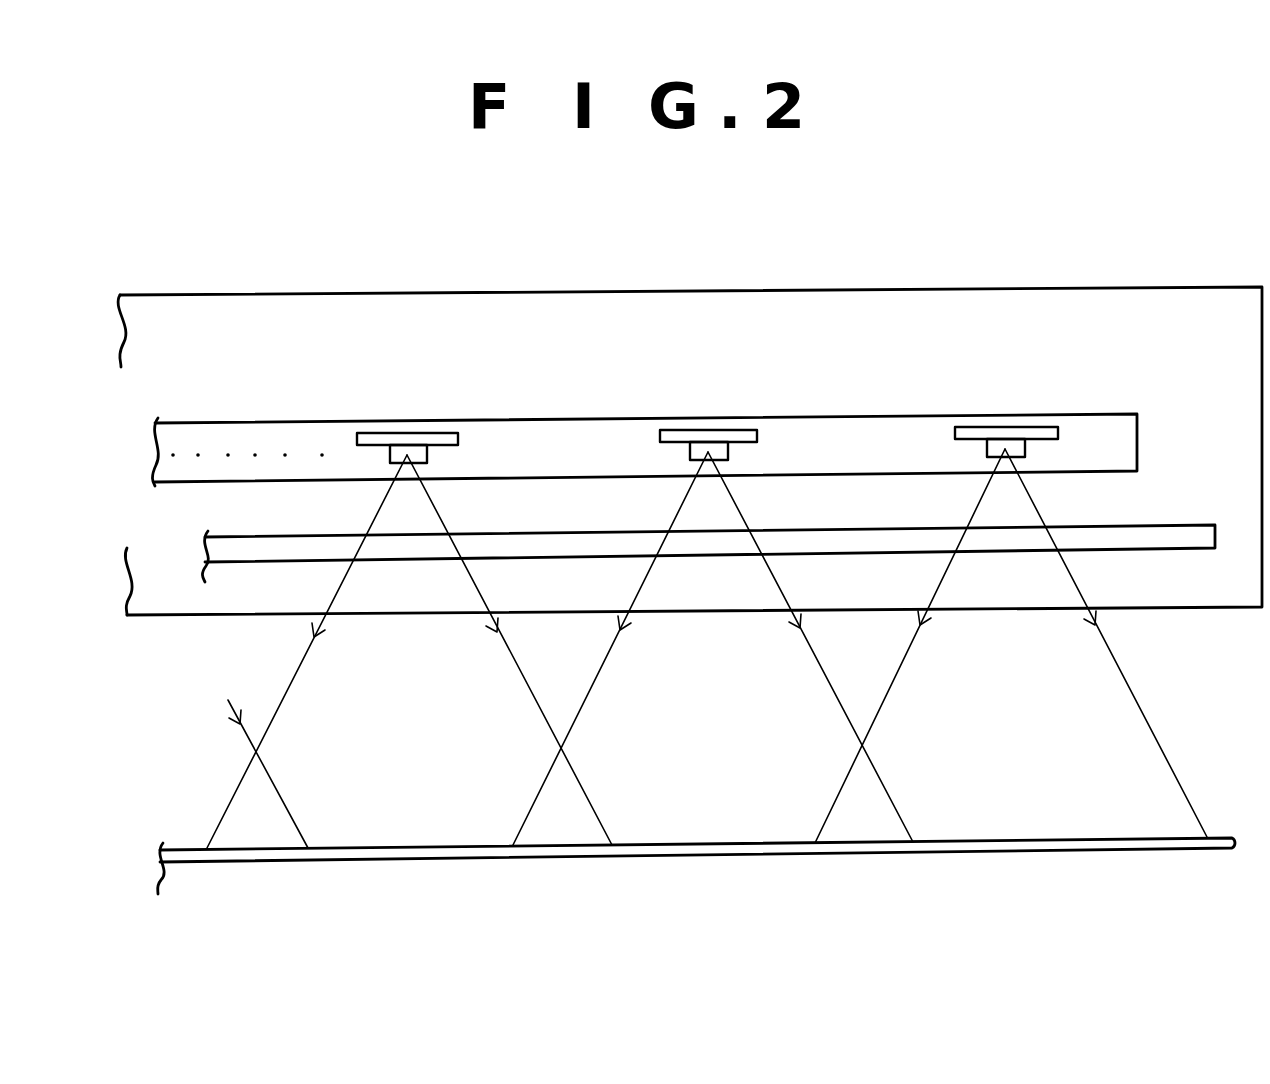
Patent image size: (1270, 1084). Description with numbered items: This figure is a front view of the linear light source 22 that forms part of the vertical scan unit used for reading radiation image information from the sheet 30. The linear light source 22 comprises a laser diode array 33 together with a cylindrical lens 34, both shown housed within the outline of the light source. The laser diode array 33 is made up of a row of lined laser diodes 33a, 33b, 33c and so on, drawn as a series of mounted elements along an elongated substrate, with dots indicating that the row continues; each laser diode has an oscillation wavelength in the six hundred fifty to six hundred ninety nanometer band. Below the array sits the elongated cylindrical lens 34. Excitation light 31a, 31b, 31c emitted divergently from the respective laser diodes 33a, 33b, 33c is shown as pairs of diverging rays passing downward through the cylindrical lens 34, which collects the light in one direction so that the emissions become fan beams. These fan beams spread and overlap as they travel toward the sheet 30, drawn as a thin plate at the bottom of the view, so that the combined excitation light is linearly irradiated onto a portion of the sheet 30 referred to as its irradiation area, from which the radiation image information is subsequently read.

The linear light source 22 is at (936, 286).
The laser diode array 33 is at (835, 417).
The laser diode 33a is at (1010, 427).
The laser diode 33b is at (702, 430).
The laser diode 33c is at (403, 433).
The cylindrical lens 34 is at (1167, 525).
The excitation light 31a is at (882, 707).
The excitation light 31b is at (575, 723).
The excitation light 31c is at (278, 713).
The sheet 30 is at (1058, 837).